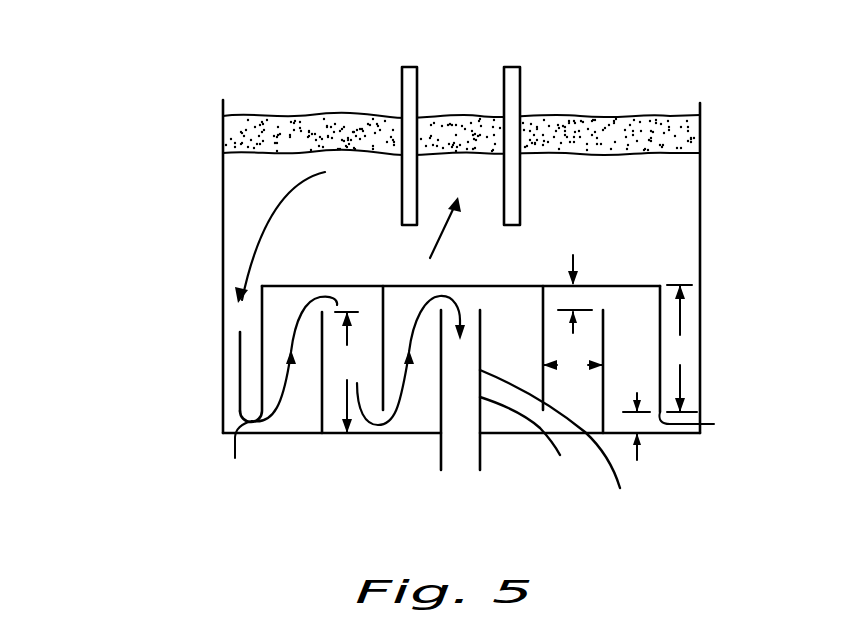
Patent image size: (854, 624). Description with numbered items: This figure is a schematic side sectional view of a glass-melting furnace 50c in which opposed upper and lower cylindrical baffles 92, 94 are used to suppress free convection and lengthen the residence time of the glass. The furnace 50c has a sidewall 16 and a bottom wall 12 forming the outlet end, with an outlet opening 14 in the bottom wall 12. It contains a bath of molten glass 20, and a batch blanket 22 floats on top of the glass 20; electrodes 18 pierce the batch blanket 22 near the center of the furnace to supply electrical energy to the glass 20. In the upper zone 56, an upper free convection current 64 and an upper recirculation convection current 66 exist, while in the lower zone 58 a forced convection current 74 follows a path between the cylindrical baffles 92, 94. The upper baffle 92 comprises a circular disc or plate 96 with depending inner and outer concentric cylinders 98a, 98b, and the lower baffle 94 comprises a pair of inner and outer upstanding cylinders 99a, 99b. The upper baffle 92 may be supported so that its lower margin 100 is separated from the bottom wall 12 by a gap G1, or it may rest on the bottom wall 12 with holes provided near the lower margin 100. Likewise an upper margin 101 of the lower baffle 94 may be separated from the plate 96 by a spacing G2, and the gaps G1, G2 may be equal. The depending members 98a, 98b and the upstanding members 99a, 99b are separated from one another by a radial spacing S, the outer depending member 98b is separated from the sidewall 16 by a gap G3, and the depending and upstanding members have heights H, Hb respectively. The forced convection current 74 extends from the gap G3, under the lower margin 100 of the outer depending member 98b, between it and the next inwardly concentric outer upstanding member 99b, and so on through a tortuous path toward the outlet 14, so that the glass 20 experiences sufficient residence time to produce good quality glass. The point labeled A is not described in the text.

The furnace 50c is at (469, 256).
The sidewall 16 is at (223, 180).
The upper zone 56 is at (702, 182).
The batch blanket 22 is at (312, 125).
The electrodes 18 is at (504, 82).
The molten glass 20 is at (652, 195).
The upper free convection current 64 is at (278, 198).
The upper recirculation convection current 66 is at (437, 241).
The upper cylindrical baffle 92 is at (460, 320).
The circular disc or plate 96 is at (634, 285).
The inner depending concentric cylinder 98a is at (385, 312).
The outer depending concentric cylinder 98b is at (262, 315).
The forced convection current 74 is at (240, 367).
The inner upstanding cylinder 99a is at (534, 445).
The outer upstanding cylinder 99b is at (322, 400).
The upper margin 101 is at (603, 310).
The bottom wall 12 is at (405, 436).
The outlet opening 14 is at (485, 457).
The lower cylindrical baffle 94 is at (640, 520).
The lower margin 100 is at (487, 452).
The gap G1 is at (633, 422).
The spacing G2 is at (570, 298).
The gap G3 is at (232, 390).
The radial spacing S is at (573, 366).
The height H is at (682, 348).
The height Hb is at (348, 372).
The location A is at (702, 313).
The lower zone 58 is at (702, 368).